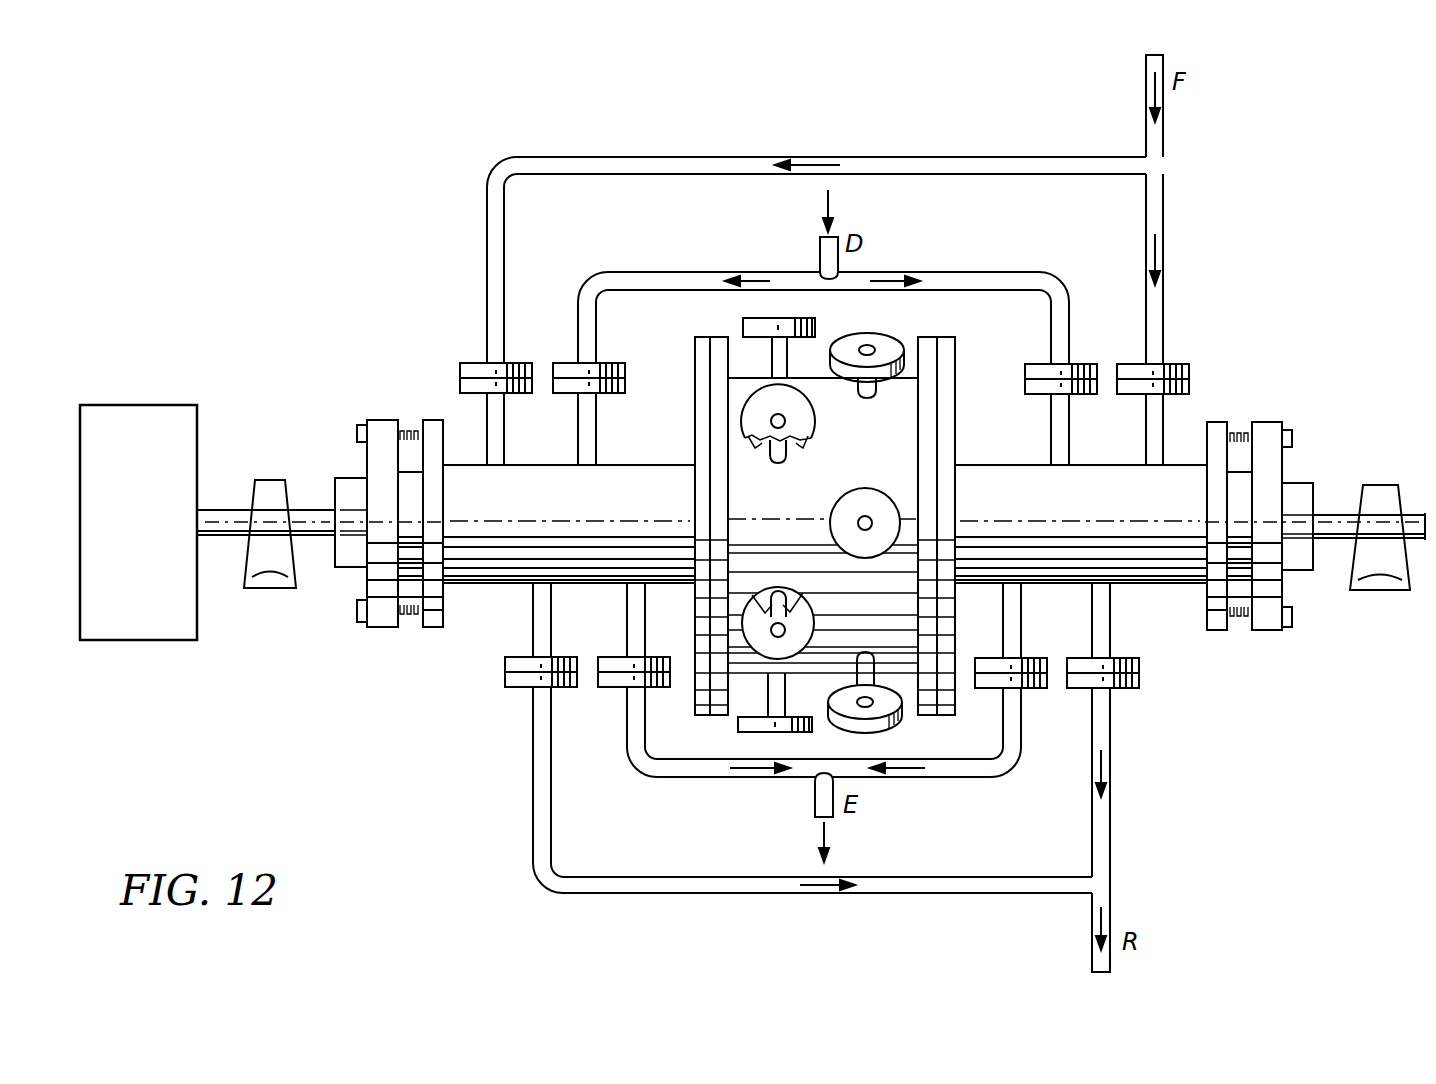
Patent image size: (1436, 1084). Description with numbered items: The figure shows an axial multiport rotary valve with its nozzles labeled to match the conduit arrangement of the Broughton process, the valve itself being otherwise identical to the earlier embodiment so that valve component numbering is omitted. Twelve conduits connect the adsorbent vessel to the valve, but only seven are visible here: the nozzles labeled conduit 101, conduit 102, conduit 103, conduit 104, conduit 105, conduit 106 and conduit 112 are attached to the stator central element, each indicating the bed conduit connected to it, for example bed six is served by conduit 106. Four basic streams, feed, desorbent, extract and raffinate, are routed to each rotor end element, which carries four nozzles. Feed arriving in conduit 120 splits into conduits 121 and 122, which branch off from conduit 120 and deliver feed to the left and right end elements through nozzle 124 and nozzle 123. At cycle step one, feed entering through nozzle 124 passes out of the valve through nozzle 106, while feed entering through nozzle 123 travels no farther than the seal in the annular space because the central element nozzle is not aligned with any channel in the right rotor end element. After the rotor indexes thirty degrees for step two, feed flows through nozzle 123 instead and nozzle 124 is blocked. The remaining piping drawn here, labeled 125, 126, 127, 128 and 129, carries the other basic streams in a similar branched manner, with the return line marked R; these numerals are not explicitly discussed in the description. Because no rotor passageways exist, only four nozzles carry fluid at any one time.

The conduit 101 is at (897, 630).
The conduit 102 is at (793, 597).
The conduit 103 is at (852, 517).
The conduit 104 is at (786, 452).
The conduit 105 is at (878, 397).
The conduit 106 is at (787, 344).
The conduit 112 is at (768, 692).
The conduit 120 is at (1165, 136).
The conduit 121 is at (912, 157).
The conduit 122 is at (1165, 210).
The nozzle 123 is at (1163, 422).
The nozzle 124 is at (507, 440).
The conduit 125 is at (1110, 627).
The conduit 126 is at (557, 638).
The return conduit 127 is at (1092, 923).
The conduit 128 is at (1110, 820).
The conduit 129 is at (552, 828).